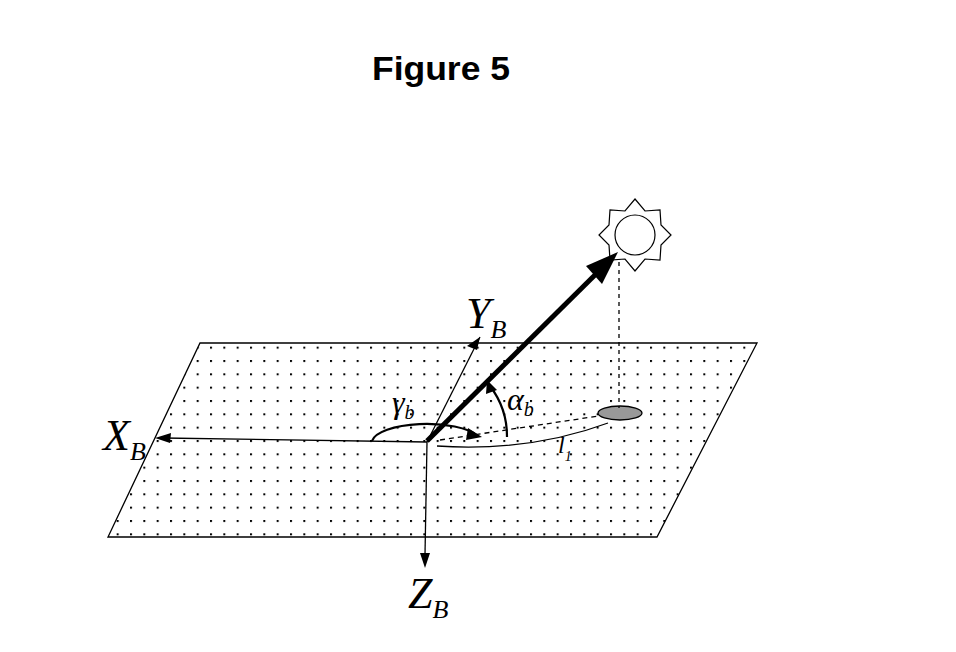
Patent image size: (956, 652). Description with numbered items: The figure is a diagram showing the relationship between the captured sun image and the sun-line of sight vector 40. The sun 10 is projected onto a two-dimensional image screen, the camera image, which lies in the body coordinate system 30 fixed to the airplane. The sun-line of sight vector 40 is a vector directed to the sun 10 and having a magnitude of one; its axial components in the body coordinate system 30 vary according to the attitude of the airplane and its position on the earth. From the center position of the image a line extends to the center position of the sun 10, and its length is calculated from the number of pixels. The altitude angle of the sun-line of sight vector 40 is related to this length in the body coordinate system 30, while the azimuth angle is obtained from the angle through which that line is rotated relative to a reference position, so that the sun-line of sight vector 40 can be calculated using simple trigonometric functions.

The sun 10 is at (648, 207).
The body coordinate system 30 is at (398, 472).
The sun-line of sight vector 40 is at (568, 297).